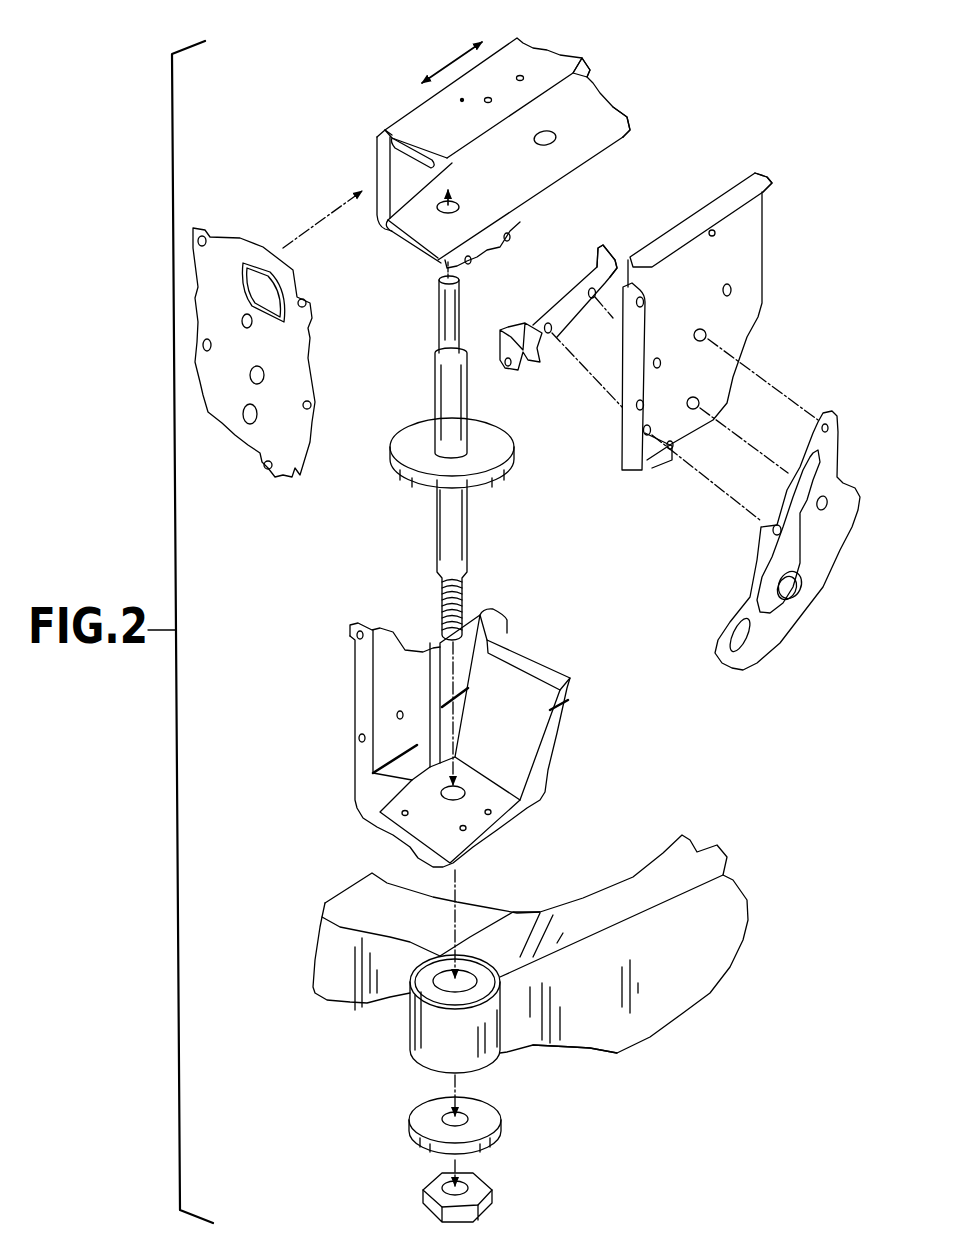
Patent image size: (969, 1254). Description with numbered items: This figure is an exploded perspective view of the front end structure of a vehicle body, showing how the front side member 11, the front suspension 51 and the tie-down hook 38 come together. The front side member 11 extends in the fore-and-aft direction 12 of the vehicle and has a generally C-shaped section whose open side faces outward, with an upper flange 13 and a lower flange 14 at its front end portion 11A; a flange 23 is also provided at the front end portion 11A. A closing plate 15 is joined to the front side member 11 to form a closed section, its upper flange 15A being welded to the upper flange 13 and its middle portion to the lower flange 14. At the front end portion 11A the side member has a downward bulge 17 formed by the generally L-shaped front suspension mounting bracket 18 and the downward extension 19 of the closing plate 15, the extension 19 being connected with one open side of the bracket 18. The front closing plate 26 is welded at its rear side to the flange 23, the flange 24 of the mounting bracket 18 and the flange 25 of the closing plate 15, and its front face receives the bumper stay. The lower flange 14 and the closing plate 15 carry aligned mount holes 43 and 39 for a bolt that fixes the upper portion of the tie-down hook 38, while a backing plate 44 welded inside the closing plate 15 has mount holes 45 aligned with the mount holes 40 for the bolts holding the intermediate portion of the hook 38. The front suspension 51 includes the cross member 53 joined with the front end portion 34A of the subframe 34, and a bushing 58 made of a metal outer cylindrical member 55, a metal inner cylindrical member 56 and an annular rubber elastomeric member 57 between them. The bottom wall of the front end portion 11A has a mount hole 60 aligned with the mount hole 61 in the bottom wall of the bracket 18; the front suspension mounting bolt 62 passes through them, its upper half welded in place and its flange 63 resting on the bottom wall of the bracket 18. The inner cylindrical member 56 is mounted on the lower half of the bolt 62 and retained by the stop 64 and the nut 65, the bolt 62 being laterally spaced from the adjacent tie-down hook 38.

The front side member 11 is at (392, 114).
The front end portion 11A is at (515, 40).
The fore-and-aft direction 12 is at (447, 65).
The upper flange 13 is at (590, 73).
The lower flange 14 is at (630, 130).
The closing plate 15 is at (747, 257).
The upper flange 15A is at (767, 172).
The downward bulge 17 is at (578, 487).
The front suspension mounting bracket 18 is at (493, 609).
The downward extension 19 is at (584, 504).
The flange 23 is at (377, 160).
The flange 24 is at (355, 705).
The flange 25 is at (633, 383).
The front closing plate 26 is at (230, 248).
The subframe 34 is at (707, 938).
The front end portion 34A is at (573, 1017).
The tie-down hook 38 is at (763, 668).
The mount hole 39 is at (706, 332).
The mount holes 40 is at (698, 403).
The mount hole 43 is at (507, 241).
The backing plate 44 is at (614, 255).
The mount holes 45 is at (592, 283).
The front suspension 51 is at (508, 952).
The cross member 53 is at (337, 993).
The outer cylindrical member 55 is at (410, 1050).
The inner cylindrical member 56 is at (453, 977).
The elastomeric member 57 is at (457, 983).
The bushing 58 is at (383, 999).
The mount hole 60 is at (417, 233).
The mount hole 61 is at (465, 790).
The front suspension mounting bolt 62 is at (437, 383).
The flange 63 is at (390, 463).
The stop 64 is at (507, 1127).
The nut 65 is at (493, 1192).